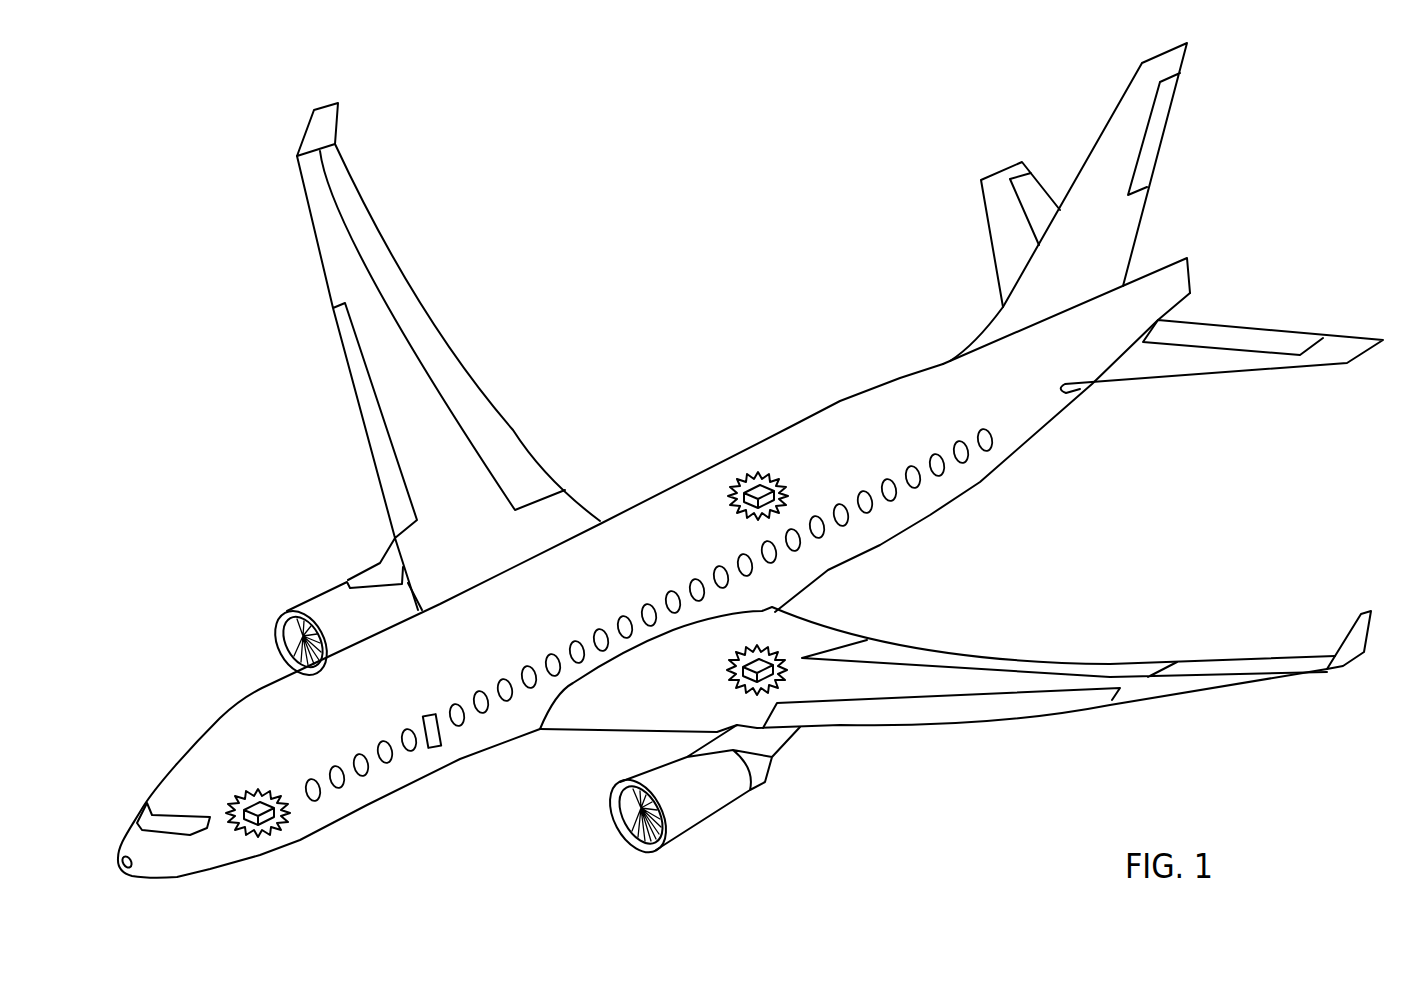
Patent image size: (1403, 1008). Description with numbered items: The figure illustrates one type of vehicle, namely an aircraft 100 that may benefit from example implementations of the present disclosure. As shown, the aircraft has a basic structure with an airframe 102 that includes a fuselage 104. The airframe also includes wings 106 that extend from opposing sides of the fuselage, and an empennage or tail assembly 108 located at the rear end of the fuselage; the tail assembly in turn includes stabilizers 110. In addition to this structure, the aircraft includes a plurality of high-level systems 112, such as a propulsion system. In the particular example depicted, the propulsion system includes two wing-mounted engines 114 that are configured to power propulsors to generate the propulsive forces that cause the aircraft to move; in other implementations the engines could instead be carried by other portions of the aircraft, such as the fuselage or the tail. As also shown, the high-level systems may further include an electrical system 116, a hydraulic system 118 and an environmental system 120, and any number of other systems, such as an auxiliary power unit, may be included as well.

The aircraft 100 is at (634, 290).
The airframe 102 is at (254, 678).
The fuselage 104 is at (353, 820).
The wings 106 is at (816, 427).
The tail assembly 108 is at (1102, 227).
The stabilizers 110 is at (1113, 118).
The high-level systems 112 is at (1035, 583).
The wing-mounted engines 114 is at (320, 592).
The electrical system 116 is at (245, 790).
The hydraulic system 118 is at (772, 660).
The environmental system 120 is at (752, 478).